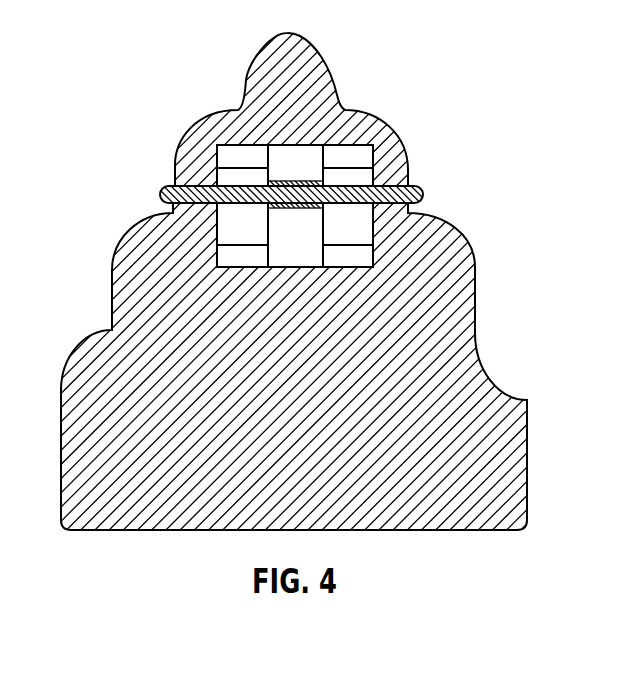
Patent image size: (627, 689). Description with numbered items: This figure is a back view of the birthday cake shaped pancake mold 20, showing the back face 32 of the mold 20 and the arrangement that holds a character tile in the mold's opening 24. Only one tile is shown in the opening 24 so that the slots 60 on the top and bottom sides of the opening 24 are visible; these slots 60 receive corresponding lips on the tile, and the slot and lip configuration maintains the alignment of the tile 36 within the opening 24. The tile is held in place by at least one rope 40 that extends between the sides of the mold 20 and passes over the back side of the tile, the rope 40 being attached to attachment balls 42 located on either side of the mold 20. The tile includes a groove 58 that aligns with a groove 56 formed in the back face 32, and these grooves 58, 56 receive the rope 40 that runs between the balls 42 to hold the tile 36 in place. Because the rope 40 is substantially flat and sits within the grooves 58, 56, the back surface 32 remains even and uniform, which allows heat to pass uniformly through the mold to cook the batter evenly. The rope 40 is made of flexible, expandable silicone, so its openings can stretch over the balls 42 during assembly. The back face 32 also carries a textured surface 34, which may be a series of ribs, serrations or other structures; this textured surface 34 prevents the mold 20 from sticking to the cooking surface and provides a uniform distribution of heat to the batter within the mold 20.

The mold 20 is at (313, 344).
The opening 24 is at (289, 110).
The back face 32 is at (321, 366).
The textured surface 34 is at (183, 352).
The tile 36 is at (297, 235).
The rope 40 is at (248, 178).
The attachment ball 42 is at (425, 197).
The groove 56 is at (408, 172).
The groove 58 is at (290, 183).
The slot 60 is at (258, 154).